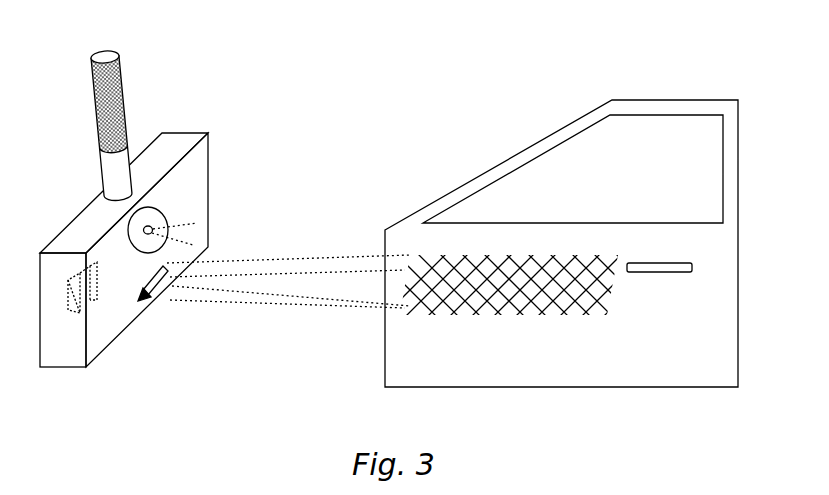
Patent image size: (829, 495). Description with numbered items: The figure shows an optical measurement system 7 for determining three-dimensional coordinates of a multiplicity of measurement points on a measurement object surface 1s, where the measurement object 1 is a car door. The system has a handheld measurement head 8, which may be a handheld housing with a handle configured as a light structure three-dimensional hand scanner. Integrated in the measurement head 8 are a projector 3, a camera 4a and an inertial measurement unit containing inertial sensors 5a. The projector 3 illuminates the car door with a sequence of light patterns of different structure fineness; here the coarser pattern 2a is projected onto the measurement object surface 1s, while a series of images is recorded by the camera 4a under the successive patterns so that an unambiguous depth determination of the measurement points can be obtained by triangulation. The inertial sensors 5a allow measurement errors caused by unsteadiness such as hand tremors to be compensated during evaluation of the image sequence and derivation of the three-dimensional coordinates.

The measurement object 1 is at (622, 73).
The measurement object surface 1s is at (531, 333).
The coarser pattern 2a is at (296, 231).
The projector 3 is at (197, 319).
The camera 4a is at (187, 173).
The inertial sensors 5a is at (71, 233).
The optical measurement system 7 is at (145, 45).
The measurement head 8 is at (102, 335).